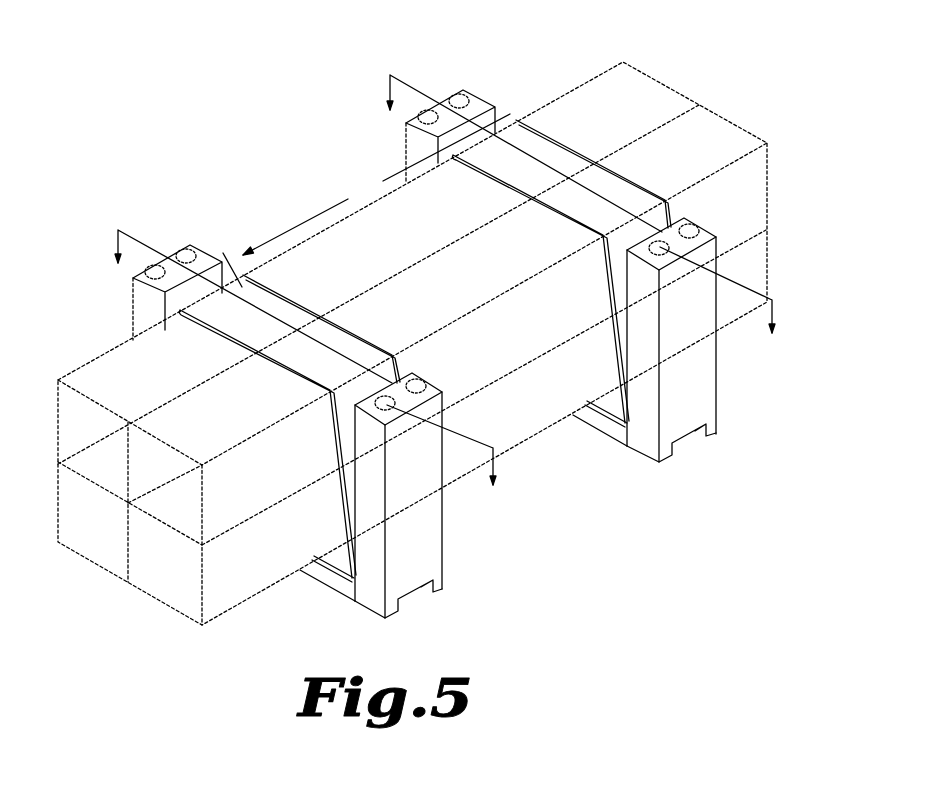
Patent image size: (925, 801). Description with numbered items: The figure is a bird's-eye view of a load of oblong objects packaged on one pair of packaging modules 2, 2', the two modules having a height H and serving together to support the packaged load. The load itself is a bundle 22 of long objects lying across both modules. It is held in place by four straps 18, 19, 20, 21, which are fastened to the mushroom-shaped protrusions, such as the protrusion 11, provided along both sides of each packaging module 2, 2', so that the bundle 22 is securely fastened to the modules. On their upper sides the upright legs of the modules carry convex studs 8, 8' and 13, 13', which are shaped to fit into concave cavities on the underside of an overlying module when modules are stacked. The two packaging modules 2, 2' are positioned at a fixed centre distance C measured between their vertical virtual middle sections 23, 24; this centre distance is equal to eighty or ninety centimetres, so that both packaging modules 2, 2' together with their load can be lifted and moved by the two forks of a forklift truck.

The packaging module 2 is at (422, 495).
The packaging module 2' is at (698, 340).
The convex stud 8 is at (606, 332).
The convex stud 8' is at (338, 143).
The mushroom-shaped protrusion 11 is at (350, 582).
The convex stud 13 is at (572, 393).
The convex stud 13' is at (275, 215).
The strap 18 is at (200, 333).
The strap 19 is at (262, 275).
The strap 20 is at (456, 158).
The strap 21 is at (516, 126).
The bundle of oblong objects 22 is at (105, 547).
The vertical virtual middle section 23 is at (493, 448).
The vertical virtual middle section 24 is at (772, 300).
The centre distance C is at (376, 184).